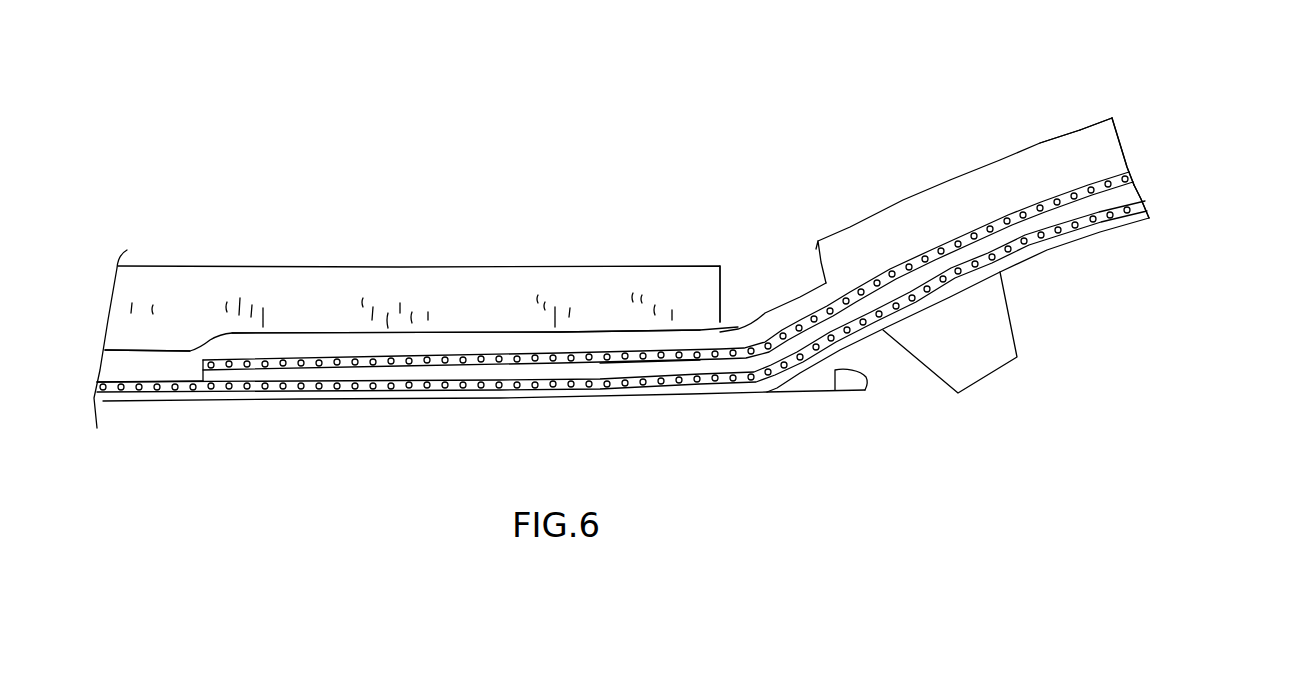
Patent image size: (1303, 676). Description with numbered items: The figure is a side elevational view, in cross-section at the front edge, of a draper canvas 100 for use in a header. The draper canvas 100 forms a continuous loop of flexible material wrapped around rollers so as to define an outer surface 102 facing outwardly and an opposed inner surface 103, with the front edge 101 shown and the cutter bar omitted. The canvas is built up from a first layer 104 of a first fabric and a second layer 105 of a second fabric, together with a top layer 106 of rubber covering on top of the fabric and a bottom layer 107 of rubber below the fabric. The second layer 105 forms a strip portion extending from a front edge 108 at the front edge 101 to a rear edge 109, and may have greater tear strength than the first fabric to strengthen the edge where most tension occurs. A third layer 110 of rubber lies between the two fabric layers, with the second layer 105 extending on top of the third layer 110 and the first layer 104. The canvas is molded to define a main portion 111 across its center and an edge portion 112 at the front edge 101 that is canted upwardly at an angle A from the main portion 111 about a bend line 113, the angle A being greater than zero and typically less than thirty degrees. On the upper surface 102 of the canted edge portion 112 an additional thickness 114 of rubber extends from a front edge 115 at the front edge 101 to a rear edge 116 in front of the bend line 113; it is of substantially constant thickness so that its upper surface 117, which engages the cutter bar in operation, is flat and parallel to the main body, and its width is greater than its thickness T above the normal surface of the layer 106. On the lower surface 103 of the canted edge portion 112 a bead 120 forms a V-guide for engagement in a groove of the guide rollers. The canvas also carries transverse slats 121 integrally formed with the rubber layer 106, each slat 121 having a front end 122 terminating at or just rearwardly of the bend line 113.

The draper canvas 100 is at (740, 453).
The front edge 101 is at (1178, 190).
The outer surface 102 is at (143, 347).
The inner surface 103 is at (393, 400).
The first layer 104 is at (198, 367).
The second layer 105 is at (305, 357).
The top layer 106 is at (483, 347).
The bottom layer 107 is at (452, 400).
The front edge 108 is at (1135, 170).
The rear edge 109 is at (158, 375).
The third layer 110 is at (665, 373).
The main portion 111 is at (747, 173).
The edge portion 112 is at (1095, 58).
The bend line 113 is at (758, 285).
The additional thickness 114 is at (935, 200).
The front edge 115 is at (1114, 118).
The rear edge 116 is at (823, 260).
The upper surface 117 is at (1060, 133).
The bead 120 is at (987, 320).
The transverse slats 121 is at (417, 293).
The front end 122 is at (721, 285).
The thickness T is at (1013, 154).
The angle A is at (855, 392).